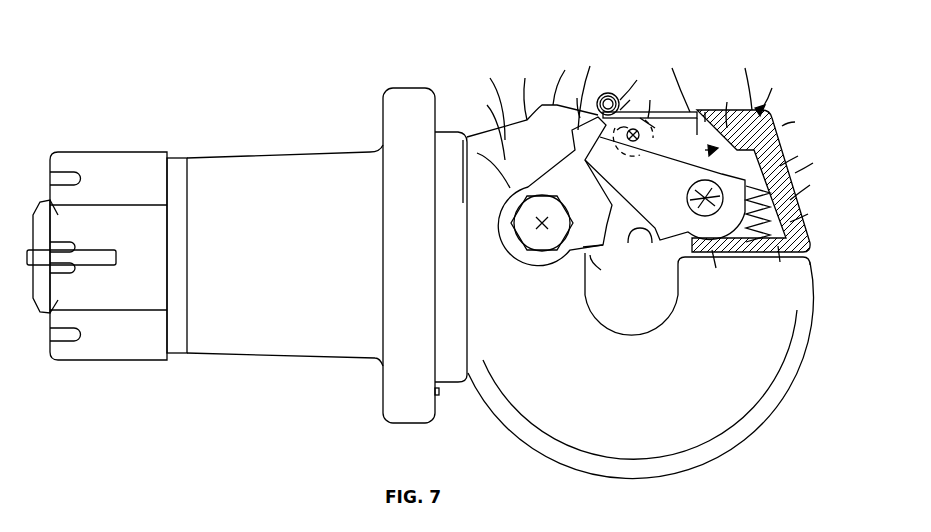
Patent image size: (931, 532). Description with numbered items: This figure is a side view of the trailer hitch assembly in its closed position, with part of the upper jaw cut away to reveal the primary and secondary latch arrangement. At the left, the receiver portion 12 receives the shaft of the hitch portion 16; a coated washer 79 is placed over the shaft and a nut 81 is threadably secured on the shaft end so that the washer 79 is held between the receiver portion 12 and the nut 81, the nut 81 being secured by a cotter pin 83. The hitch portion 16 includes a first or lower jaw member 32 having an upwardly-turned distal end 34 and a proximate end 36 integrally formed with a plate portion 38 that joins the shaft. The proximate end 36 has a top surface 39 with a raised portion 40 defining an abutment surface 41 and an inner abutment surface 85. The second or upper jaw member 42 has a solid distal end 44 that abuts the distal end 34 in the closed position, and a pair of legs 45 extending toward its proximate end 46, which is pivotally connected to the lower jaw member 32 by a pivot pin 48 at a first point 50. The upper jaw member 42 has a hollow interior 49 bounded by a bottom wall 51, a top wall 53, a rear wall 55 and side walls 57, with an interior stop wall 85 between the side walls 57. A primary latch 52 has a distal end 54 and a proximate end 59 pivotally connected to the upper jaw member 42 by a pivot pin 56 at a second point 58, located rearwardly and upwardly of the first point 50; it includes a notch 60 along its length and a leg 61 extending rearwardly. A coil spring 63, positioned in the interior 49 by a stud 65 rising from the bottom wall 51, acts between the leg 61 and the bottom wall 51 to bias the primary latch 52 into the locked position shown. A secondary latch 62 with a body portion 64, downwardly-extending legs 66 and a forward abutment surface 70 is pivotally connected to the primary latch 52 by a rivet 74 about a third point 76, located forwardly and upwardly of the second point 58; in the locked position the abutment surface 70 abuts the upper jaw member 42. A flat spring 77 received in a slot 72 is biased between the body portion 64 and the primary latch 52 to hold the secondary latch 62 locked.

The receiver portion 12 is at (407, 80).
The hitch portion 16 is at (782, 104).
The first or lower jaw member 32 is at (735, 455).
The upwardly-turned distal end 34 is at (800, 272).
The proximate end 36 is at (463, 135).
The plate portion 38 is at (485, 100).
The top surface 39 is at (485, 123).
The raised portion 40 is at (566, 79).
The abutment surface 41 is at (526, 90).
The second or upper jaw member 42 is at (700, 112).
The solid distal end 44 is at (813, 160).
The legs 45 is at (606, 274).
The proximate end 46 is at (540, 152).
The pivot pin 48 is at (542, 250).
The hollow interior 49 is at (769, 93).
The first point 50 is at (512, 240).
The bottom wall 51 is at (718, 271).
The primary latch 52 is at (728, 106).
The top wall 53 is at (744, 80).
The distal end 54 is at (577, 99).
The rear wall 55 is at (796, 118).
The pivot pin 56 is at (690, 183).
The side walls 57 is at (809, 185).
The second point 58 is at (700, 216).
The proximate end 59 is at (752, 246).
The notch 60 is at (610, 160).
The leg 61 is at (797, 153).
The secondary latch 62 is at (607, 80).
The coil spring 63 is at (782, 264).
The body portion 64 is at (628, 95).
The stud 65 is at (809, 211).
The legs 66 is at (702, 148).
The forward abutment surface 70 is at (673, 81).
The slot 72 is at (635, 81).
The rivet 74 is at (640, 138).
The third point 76 is at (614, 139).
The flat spring 77 is at (652, 104).
The coated washer 79 is at (177, 163).
The nut 81 is at (87, 154).
The cotter pin 83 is at (97, 263).
The interior stop wall 85 is at (591, 89).